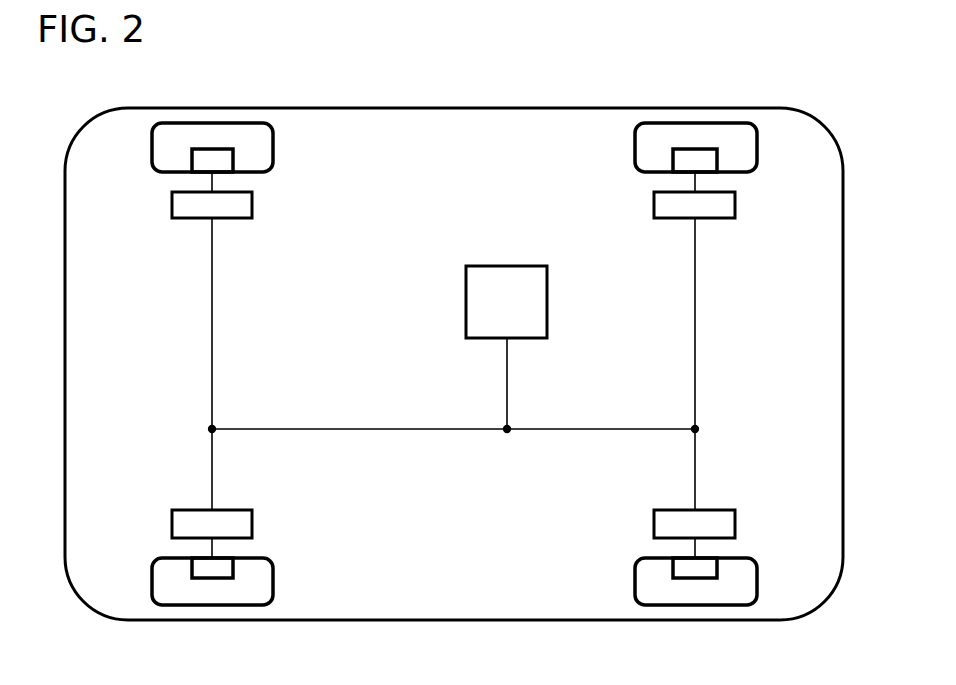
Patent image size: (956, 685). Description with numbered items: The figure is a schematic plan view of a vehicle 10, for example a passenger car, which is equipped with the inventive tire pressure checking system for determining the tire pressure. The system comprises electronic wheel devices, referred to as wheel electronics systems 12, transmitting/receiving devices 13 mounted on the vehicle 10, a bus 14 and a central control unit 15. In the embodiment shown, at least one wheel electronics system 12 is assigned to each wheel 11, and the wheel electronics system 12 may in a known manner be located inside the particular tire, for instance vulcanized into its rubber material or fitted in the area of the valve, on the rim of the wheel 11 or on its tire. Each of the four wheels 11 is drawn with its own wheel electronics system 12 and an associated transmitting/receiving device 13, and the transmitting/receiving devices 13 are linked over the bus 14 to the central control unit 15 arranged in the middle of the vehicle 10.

The vehicle 10 is at (530, 107).
The wheel 11 is at (273, 147).
The wheel electronics system 12 is at (218, 160).
The transmitting/receiving device 13 is at (235, 220).
The bus 14 is at (401, 427).
The central control unit 15 is at (507, 265).